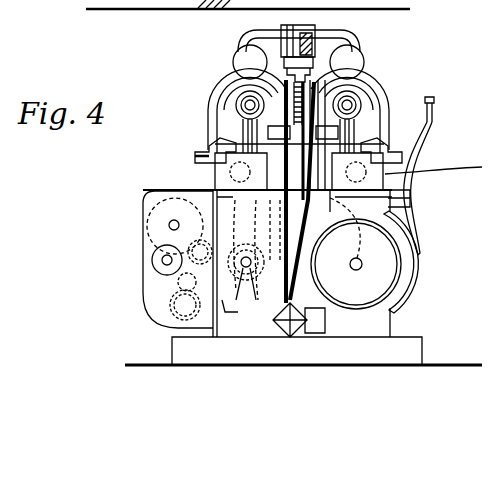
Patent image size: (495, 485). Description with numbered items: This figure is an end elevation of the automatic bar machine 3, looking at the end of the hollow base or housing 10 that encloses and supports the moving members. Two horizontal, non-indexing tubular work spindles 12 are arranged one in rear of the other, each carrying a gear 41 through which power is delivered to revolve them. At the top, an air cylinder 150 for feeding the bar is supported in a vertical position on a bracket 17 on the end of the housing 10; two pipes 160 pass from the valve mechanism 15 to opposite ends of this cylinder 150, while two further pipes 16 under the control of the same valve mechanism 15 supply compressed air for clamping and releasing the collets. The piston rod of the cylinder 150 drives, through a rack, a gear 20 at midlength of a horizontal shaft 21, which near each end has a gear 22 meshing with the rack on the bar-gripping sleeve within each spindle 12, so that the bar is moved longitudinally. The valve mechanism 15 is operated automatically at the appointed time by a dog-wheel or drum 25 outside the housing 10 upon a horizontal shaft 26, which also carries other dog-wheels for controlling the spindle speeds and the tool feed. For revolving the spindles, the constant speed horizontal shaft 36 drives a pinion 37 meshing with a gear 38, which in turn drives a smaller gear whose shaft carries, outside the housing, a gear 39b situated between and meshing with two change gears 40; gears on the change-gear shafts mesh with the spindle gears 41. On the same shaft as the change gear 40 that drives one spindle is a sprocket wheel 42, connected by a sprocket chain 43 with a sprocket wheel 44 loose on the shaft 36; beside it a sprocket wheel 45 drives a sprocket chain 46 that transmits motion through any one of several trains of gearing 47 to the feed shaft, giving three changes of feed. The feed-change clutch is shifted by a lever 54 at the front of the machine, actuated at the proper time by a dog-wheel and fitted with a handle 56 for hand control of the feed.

The sewing machine 3 is at (437, 166).
The base or housing 10 is at (392, 323).
The work spindle 12 is at (223, 88).
The valve mechanism 15 is at (287, 333).
The pipe 16 is at (305, 205).
The bracket 17 is at (320, 78).
The gear 20 is at (327, 132).
The horizontal shaft 21 is at (279, 132).
The gear 22 is at (230, 143).
The dog-wheel or drum 25 is at (403, 280).
The horizontal shaft 26 is at (358, 263).
The horizontal shaft 36 is at (237, 297).
The pinion 37 is at (251, 290).
The gear 38 is at (342, 205).
The gear 39b is at (410, 189).
The change gear 40 is at (230, 134).
The gear 41 is at (218, 98).
The sprocket wheel 42 is at (206, 152).
The sprocket chain 43 is at (232, 213).
The sprocket wheel 44 is at (237, 280).
The sprocket wheel 45 is at (168, 275).
The sprocket chain 46 is at (220, 310).
The trains of gearing 47 is at (170, 254).
The lever 54 is at (430, 157).
The handle 56 is at (434, 112).
The cylinder 150 is at (300, 43).
The pipe 160 is at (283, 216).